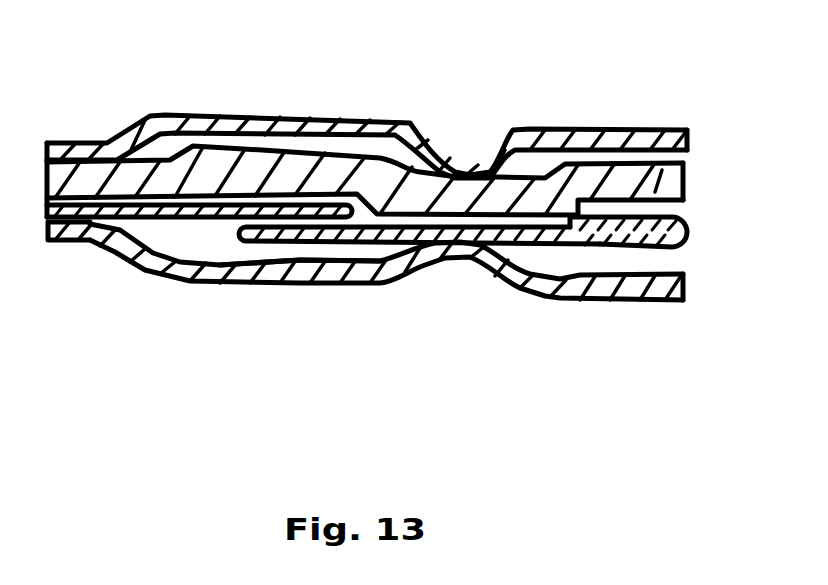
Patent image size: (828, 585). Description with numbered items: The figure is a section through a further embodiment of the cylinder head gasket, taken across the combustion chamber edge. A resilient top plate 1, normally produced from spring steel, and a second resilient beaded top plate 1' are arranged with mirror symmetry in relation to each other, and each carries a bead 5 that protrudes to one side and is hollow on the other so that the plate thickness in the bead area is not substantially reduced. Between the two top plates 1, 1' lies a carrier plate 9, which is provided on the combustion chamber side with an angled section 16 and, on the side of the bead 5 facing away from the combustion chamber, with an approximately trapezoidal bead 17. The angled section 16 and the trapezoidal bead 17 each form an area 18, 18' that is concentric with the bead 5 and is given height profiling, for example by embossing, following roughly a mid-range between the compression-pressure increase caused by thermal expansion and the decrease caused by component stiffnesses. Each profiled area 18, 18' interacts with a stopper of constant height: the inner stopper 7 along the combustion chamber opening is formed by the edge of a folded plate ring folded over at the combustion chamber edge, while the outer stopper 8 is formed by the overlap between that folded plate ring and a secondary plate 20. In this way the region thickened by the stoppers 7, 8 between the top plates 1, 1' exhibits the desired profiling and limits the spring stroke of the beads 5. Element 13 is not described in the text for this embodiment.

The top plate 1 is at (365, 115).
The second top plate 1' is at (300, 328).
The bead 5 is at (508, 140).
The inner deformation limiter or stopper 7 is at (629, 247).
The outer deformation limiter or stopper 8 is at (273, 243).
The carrier plate 9 is at (117, 180).
The sleeve bulge 13 is at (398, 245).
The angled section 16 is at (612, 178).
The trapezoidal bead 17 is at (330, 177).
The area 18 is at (678, 225).
The area 18' is at (199, 118).
The secondary plate 20 is at (93, 213).